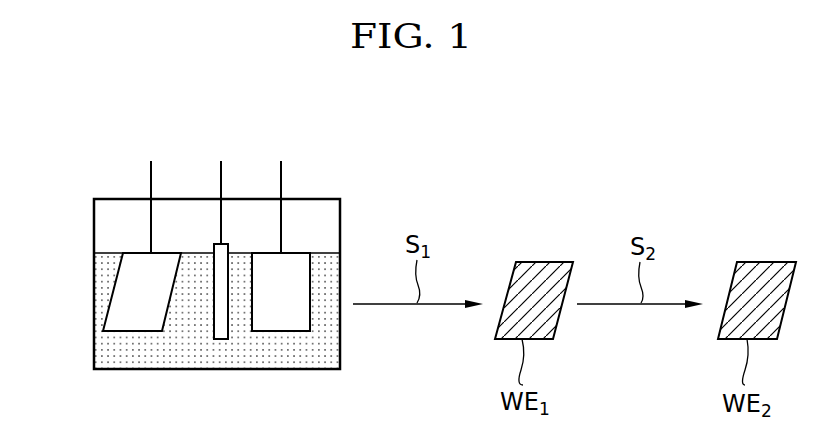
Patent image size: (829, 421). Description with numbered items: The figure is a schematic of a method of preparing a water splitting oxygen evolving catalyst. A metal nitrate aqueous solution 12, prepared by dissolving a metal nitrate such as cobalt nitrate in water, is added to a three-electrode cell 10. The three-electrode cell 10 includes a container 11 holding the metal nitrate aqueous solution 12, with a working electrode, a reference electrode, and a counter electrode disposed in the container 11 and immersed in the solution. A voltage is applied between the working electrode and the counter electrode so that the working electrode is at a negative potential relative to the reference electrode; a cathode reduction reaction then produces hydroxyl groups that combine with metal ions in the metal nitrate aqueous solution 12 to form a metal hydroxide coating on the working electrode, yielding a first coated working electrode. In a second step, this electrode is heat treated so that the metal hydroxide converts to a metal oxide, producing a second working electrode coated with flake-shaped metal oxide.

The 3-electrode cell 10 is at (345, 180).
The container 11 is at (94, 283).
The metal nitrate aqueous solution 12 is at (103, 353).